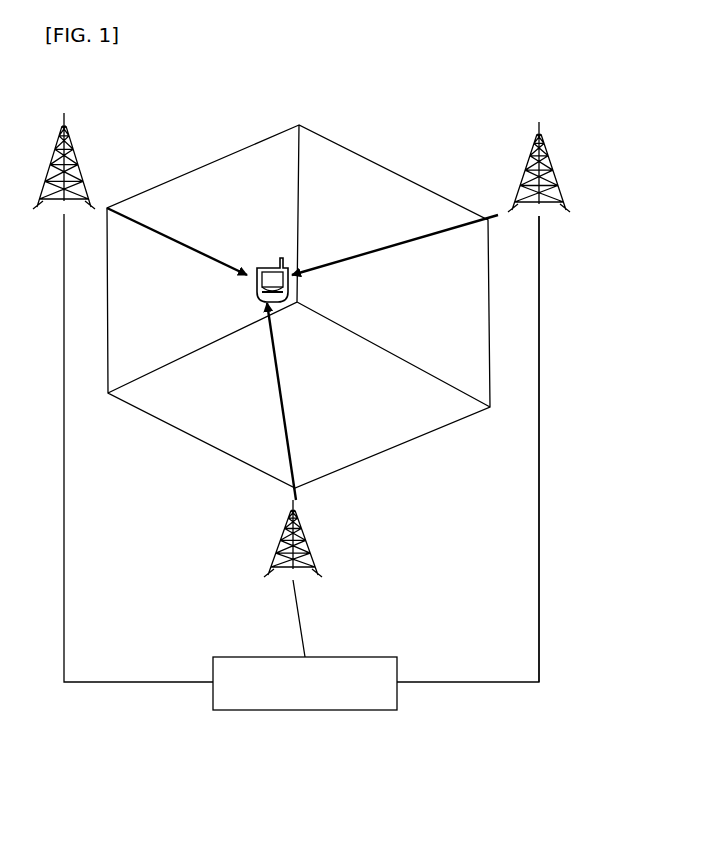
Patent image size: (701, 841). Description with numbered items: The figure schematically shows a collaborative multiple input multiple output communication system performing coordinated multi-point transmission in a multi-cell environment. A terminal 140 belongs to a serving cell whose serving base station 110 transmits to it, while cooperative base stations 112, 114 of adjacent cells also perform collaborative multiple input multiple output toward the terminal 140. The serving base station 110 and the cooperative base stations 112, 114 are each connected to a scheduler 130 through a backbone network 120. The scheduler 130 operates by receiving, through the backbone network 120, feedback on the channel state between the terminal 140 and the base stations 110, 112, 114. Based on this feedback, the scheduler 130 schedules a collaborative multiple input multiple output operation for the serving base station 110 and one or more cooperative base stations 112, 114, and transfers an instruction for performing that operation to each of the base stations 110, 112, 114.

The serving base station 110 is at (75, 142).
The cooperative base station 112 is at (550, 157).
The cooperative base station 114 is at (315, 552).
The backbone network 120 is at (537, 522).
The scheduler 130 is at (358, 655).
The terminal 140 is at (265, 265).